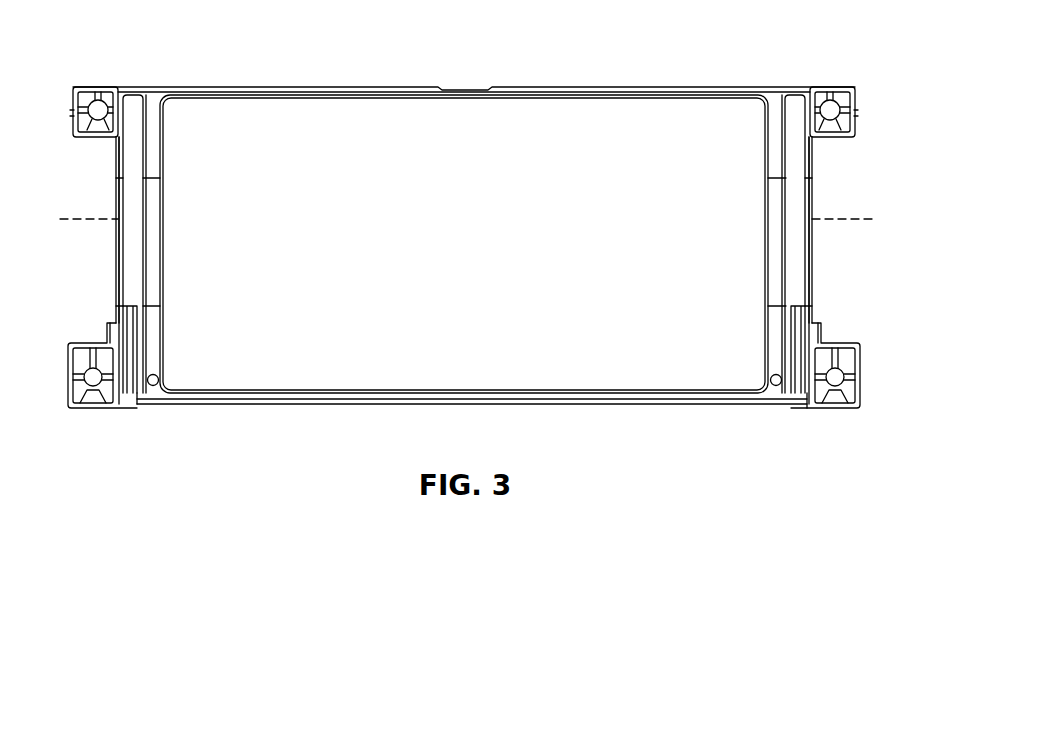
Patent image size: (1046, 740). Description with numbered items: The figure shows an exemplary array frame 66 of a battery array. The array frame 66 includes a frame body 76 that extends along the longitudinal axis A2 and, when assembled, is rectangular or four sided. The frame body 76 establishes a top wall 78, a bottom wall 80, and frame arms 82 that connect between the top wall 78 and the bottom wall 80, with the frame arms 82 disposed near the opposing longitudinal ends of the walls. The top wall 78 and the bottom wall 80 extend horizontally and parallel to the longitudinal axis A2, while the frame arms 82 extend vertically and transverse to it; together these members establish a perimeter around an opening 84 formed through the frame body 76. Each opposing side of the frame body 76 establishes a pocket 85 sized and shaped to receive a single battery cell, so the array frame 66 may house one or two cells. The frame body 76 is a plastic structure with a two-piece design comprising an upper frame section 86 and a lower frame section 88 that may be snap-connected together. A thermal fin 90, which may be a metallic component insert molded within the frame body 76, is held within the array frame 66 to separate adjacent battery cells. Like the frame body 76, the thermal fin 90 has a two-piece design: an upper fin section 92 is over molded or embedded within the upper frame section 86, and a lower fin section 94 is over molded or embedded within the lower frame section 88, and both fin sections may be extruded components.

The array frame 66 is at (804, 50).
The frame body 76 is at (105, 199).
The top wall 78 is at (524, 88).
The bottom wall 80 is at (425, 403).
The frame arms 82 is at (115, 295).
The opening 84 is at (167, 164).
The pocket 85 is at (208, 379).
The upper frame section 86 is at (146, 103).
The lower frame section 88 is at (138, 406).
The thermal fin 90 is at (356, 323).
The upper fin section 92 is at (683, 382).
The lower fin section 94 is at (573, 405).
The longitudinal axis A2 is at (82, 222).